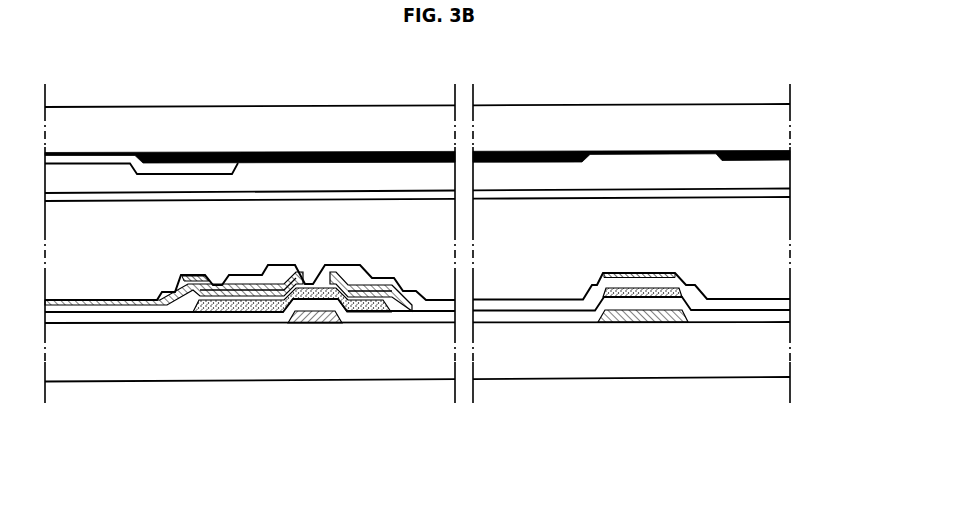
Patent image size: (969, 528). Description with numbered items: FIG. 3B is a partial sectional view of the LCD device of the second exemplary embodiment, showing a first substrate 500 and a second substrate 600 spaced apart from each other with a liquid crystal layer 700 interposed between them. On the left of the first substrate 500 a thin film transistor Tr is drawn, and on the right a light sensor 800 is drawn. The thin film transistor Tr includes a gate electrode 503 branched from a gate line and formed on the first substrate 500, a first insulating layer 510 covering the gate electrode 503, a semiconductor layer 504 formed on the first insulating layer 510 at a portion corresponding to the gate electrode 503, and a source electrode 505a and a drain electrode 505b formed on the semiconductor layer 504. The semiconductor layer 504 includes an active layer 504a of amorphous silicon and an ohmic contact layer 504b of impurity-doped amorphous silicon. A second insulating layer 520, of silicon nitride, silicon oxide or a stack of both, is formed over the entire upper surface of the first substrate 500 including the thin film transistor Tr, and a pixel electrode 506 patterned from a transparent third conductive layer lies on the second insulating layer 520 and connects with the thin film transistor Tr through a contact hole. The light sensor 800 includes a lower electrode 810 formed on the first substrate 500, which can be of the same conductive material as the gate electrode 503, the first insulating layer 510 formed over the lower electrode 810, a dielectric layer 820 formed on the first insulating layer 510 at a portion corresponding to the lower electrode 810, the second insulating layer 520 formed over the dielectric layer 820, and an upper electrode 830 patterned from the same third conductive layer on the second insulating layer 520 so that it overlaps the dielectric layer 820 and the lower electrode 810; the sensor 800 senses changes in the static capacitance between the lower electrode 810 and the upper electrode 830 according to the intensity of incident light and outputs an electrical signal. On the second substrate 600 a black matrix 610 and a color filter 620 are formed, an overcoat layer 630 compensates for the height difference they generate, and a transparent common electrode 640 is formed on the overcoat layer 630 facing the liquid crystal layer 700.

The first substrate 500 is at (788, 355).
The gate electrode 503 is at (312, 318).
The semiconductor layer 504 is at (292, 364).
The active layer 504a is at (267, 305).
The ohmic contact layer 504b is at (220, 303).
The source electrode 505a is at (371, 344).
The drain electrode 505b is at (193, 300).
The pixel electrode 506 is at (193, 278).
The first insulating layer 510 is at (792, 316).
The second insulating layer 520 is at (790, 302).
The second substrate 600 is at (788, 123).
The black matrix 610 is at (523, 152).
The color filter 620 is at (180, 168).
The overcoat layer 630 is at (788, 172).
The common electrode 640 is at (790, 195).
The liquid crystal layer 700 is at (788, 250).
The light sensor 800 is at (643, 362).
The lower electrode 810 is at (605, 318).
The dielectric layer 820 is at (638, 292).
The upper electrode 830 is at (665, 276).
The thin film transistor Tr is at (228, 384).